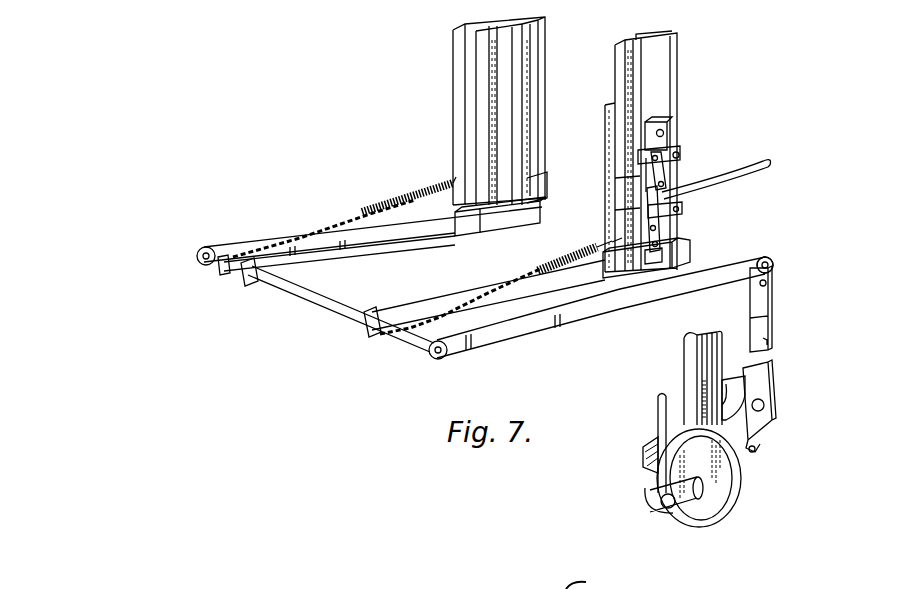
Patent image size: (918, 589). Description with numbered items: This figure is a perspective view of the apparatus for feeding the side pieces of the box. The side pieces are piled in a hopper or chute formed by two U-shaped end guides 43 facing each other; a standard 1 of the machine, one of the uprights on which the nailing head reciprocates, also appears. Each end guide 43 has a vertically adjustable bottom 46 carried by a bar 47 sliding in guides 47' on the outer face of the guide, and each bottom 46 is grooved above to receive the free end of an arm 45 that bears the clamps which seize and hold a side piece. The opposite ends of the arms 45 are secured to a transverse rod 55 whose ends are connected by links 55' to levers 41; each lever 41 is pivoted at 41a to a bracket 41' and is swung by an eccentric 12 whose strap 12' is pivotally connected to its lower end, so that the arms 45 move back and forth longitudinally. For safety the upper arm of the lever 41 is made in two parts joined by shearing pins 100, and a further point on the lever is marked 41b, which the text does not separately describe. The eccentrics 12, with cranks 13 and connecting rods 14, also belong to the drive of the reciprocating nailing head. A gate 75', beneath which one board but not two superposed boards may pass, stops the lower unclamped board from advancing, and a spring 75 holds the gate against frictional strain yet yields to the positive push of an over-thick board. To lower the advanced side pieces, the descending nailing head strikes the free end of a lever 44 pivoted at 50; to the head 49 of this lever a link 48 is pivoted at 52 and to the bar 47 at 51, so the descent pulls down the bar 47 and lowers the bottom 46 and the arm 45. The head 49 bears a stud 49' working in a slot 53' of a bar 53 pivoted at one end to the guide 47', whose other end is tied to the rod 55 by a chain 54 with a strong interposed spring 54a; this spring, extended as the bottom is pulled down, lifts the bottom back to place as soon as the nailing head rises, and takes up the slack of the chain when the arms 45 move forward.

The standard 1 is at (690, 365).
The eccentric 12 is at (716, 478).
The eccentric strap 12' is at (725, 478).
The crank 13 is at (690, 515).
The connecting rod 14 is at (657, 413).
The lever 41 is at (776, 359).
The bracket 41' is at (735, 374).
The pivot 41a is at (766, 405).
The bar end 41b is at (770, 272).
The U-shaped end guide 43 is at (490, 52).
The lever 44 is at (722, 181).
The arm 45 is at (388, 246).
The bottom 46 is at (513, 240).
The bar 47 is at (683, 129).
The guide 47' is at (680, 188).
The link 48 is at (675, 173).
The head 49 is at (678, 222).
The stud 49' is at (621, 230).
The pivot 50 is at (662, 252).
The pivot 51 is at (668, 180).
The pivot 52 is at (684, 211).
The bar 53 is at (609, 180).
The slot 53' is at (609, 221).
The chain 54 is at (305, 230).
The spring 54a is at (386, 205).
The transverse rod 55 is at (337, 305).
The link 55' is at (485, 285).
The spring 75 is at (547, 108).
The gate 75' is at (550, 175).
The shearing pin 100 is at (767, 284).